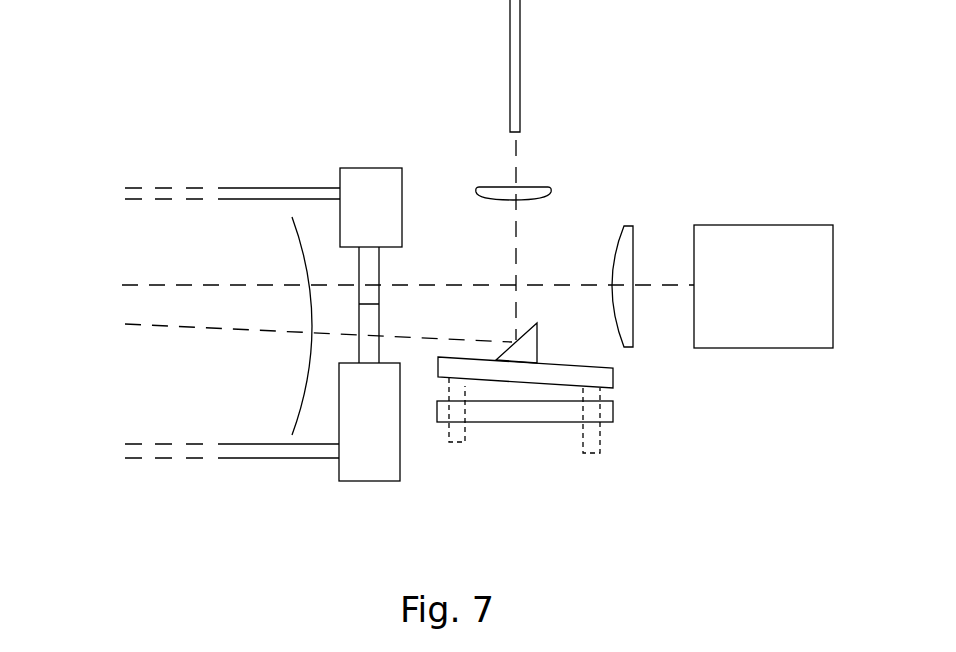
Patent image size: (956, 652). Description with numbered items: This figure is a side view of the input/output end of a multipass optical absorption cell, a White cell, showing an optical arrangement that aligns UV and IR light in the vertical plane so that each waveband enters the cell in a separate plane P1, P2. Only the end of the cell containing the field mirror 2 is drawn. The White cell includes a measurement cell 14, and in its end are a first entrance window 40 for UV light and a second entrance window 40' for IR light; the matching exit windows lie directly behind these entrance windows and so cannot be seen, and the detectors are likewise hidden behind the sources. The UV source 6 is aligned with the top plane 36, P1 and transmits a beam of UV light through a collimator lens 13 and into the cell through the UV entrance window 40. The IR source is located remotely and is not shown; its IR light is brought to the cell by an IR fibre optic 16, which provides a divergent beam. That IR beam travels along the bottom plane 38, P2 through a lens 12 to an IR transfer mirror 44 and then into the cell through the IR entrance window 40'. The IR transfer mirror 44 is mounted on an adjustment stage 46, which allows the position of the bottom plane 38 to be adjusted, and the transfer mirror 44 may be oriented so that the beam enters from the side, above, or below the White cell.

The field mirror 2 is at (298, 396).
The UV source 6 is at (773, 253).
The lens 12 is at (556, 182).
The collimator lens 13 is at (642, 343).
The measurement cell 14 is at (345, 170).
The IR fibre optic 16 is at (530, 77).
The top plane 36 is at (177, 285).
The bottom plane 38 is at (168, 325).
The first entrance window 40 is at (268, 255).
The second entrance window 40' is at (263, 353).
The IR transfer mirror 44 is at (535, 362).
The adjustment stage 46 is at (490, 368).
The plane P1 is at (412, 285).
The plane P2 is at (436, 337).